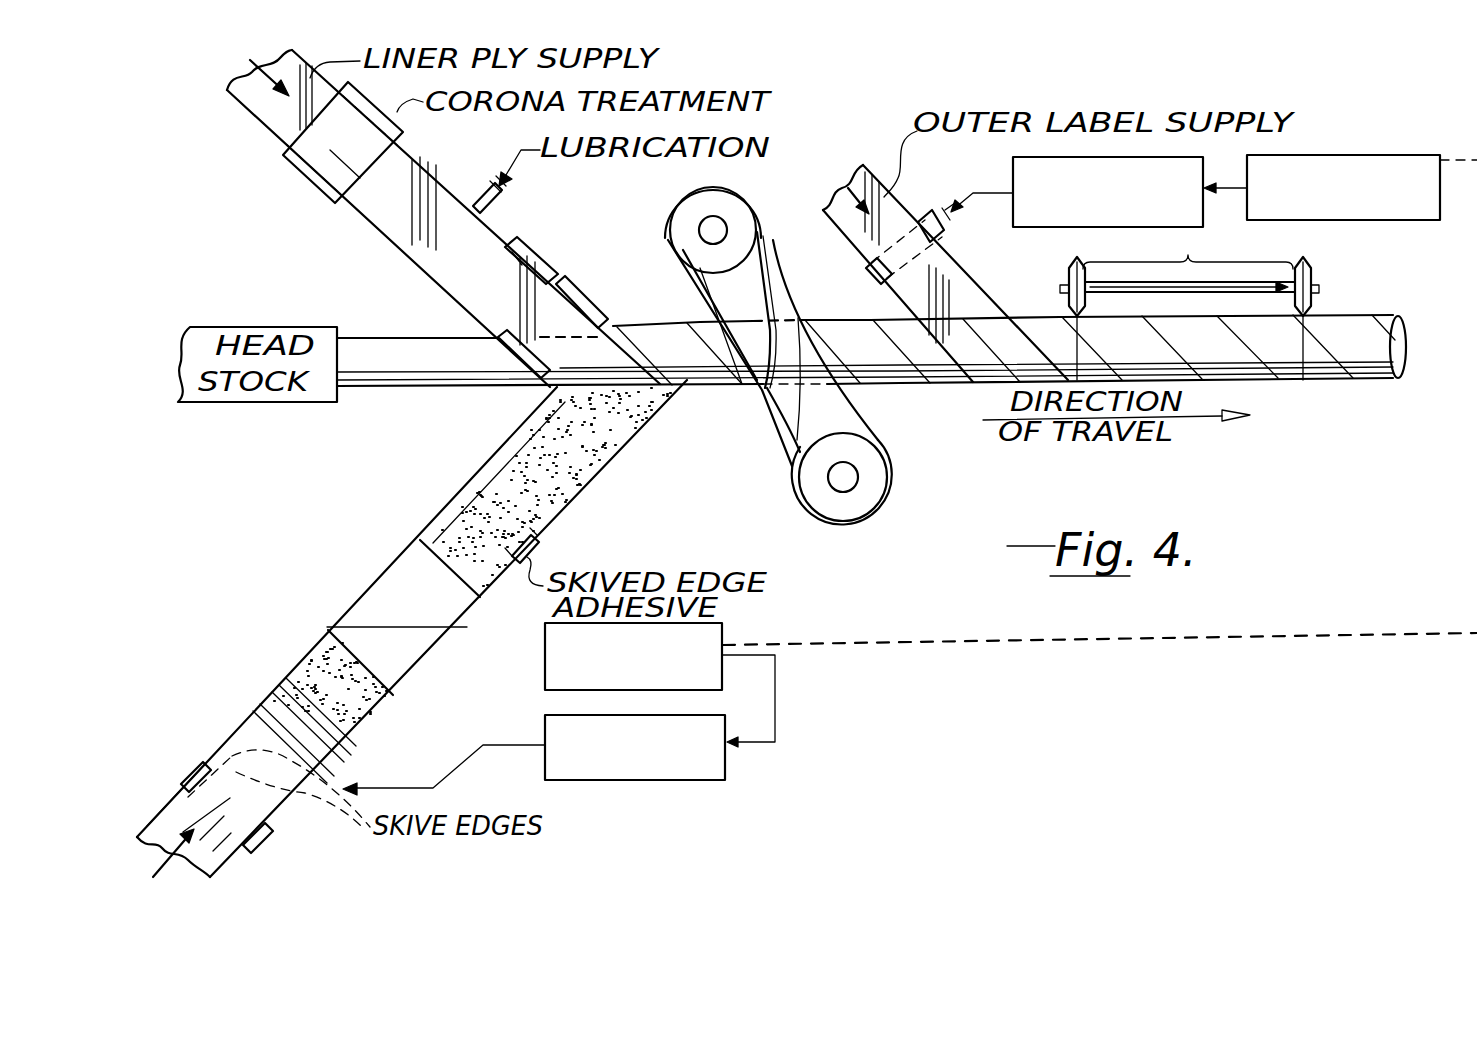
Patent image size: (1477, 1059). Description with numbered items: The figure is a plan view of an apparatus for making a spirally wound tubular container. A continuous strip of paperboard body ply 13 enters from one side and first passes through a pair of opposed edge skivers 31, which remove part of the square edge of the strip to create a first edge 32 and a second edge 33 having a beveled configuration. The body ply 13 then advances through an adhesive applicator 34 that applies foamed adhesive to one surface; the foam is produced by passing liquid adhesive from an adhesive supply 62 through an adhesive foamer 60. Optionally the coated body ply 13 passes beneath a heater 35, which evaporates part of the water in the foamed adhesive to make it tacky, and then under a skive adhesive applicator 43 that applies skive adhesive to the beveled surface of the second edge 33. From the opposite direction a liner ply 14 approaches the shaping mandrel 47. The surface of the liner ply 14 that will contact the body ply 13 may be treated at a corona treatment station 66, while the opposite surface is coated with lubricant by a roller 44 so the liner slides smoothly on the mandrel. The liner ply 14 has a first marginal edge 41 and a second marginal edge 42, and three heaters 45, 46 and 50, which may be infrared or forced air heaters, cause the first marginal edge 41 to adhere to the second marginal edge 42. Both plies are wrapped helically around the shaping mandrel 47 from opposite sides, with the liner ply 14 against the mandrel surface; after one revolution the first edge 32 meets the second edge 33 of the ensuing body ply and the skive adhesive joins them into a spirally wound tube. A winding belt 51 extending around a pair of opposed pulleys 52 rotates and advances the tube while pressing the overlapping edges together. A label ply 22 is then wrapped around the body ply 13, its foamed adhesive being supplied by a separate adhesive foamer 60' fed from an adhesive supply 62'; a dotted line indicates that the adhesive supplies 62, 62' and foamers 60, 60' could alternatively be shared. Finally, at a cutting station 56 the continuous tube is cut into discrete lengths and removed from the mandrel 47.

The body ply 13 is at (226, 860).
The liner ply 14 is at (283, 140).
The label ply 22 is at (990, 313).
The edge skivers 31 is at (190, 783).
The first edge 32 is at (635, 333).
The second edge 33 is at (363, 716).
The adhesive applicator 34 is at (325, 772).
The heater 35 is at (413, 658).
The first marginal edge 41 is at (372, 222).
The second marginal edge 42 is at (548, 281).
The skive adhesive applicator 43 is at (533, 533).
The roller 44 is at (485, 212).
The heater 45 is at (530, 250).
The heater 46 is at (583, 295).
The shaping mandrel 47 is at (378, 386).
The heater 50 is at (527, 376).
The winding belt 51 is at (763, 214).
The pulleys 52 is at (699, 220).
The cutting station 56 is at (1312, 300).
The adhesive foamer 60 is at (535, 778).
The adhesive foamer 60' is at (1034, 210).
The adhesive supply 62 is at (666, 671).
The adhesive supply 62' is at (1340, 159).
The corona treatment station 66 is at (310, 185).